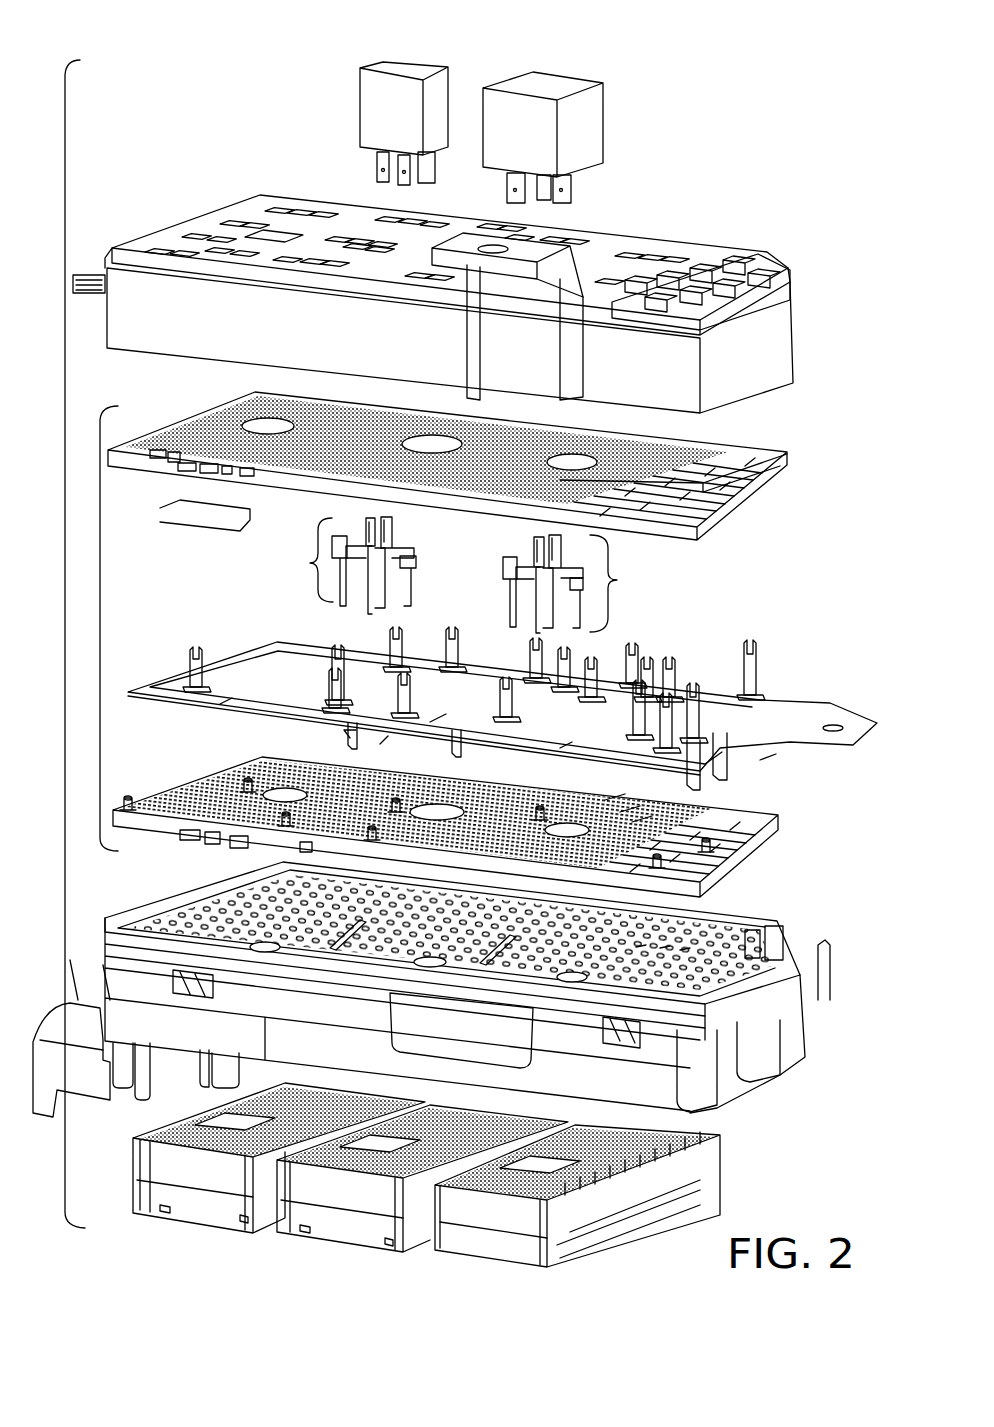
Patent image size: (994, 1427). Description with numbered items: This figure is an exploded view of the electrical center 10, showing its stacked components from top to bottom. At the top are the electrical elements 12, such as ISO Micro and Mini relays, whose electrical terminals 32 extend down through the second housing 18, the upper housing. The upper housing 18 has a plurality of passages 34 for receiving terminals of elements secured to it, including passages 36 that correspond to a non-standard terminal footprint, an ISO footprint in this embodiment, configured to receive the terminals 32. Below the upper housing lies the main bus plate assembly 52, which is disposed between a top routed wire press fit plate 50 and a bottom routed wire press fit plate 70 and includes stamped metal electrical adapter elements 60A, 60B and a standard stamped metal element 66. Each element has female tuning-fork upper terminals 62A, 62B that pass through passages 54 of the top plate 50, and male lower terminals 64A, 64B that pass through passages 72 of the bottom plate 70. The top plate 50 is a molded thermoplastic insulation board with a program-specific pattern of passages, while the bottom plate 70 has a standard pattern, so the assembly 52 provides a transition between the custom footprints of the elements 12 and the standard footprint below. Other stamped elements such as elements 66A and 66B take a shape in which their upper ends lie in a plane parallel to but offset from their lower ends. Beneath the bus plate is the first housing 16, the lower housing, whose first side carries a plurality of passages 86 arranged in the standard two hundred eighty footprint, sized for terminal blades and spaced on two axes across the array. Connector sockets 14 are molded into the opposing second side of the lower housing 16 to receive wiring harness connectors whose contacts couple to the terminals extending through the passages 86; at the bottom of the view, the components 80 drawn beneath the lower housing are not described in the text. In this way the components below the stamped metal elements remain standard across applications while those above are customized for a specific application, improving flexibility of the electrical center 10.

The electrical center 10 is at (63, 657).
The electrical elements 12 is at (502, 90).
The connector sockets 14 is at (307, 1050).
The first housing 16 is at (490, 987).
The second housing 18 is at (780, 358).
The electrical terminals 32 is at (383, 180).
The passages 34 is at (173, 248).
The passages 36 is at (270, 200).
The top routed wire press fit plate 50 is at (780, 460).
The main bus plate assembly 52 is at (98, 636).
The passages 54 is at (205, 460).
The stamped metal electrical adapter element 60A is at (549, 580).
The stamped metal electrical adapter element 60B is at (324, 570).
The upper terminal 62A is at (553, 547).
The upper terminal 62B is at (383, 530).
The lower terminal 64A is at (577, 613).
The lower terminal 64B is at (407, 598).
The standard stamped metal element 66 is at (502, 685).
The electrical element 66A is at (343, 732).
The electrical element 66B is at (413, 713).
The bottom routed wire press fit plate 70 is at (482, 827).
The passages 72 is at (640, 815).
The connector blocks 80 is at (480, 1240).
The passages 86 is at (683, 950).